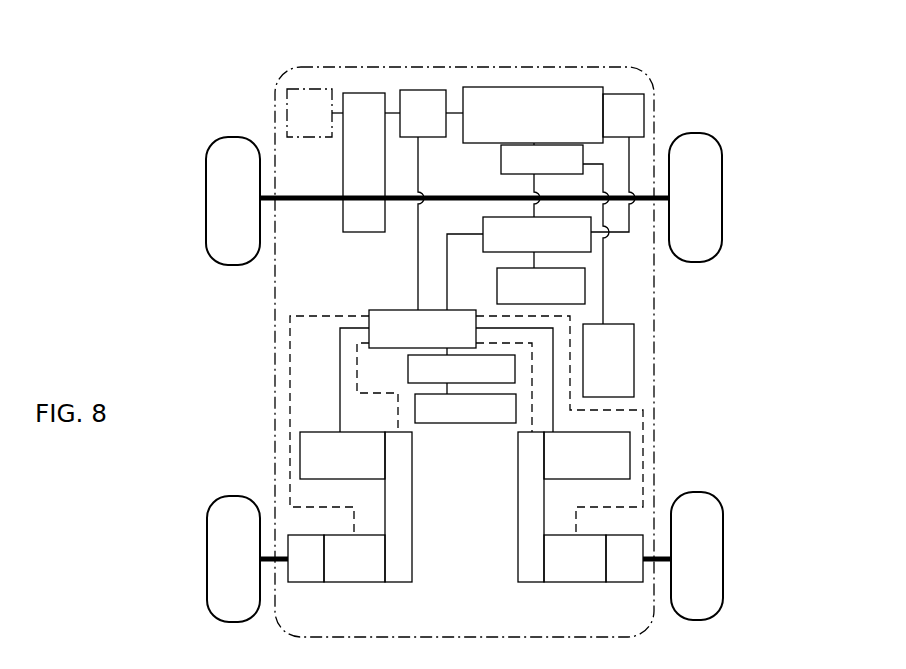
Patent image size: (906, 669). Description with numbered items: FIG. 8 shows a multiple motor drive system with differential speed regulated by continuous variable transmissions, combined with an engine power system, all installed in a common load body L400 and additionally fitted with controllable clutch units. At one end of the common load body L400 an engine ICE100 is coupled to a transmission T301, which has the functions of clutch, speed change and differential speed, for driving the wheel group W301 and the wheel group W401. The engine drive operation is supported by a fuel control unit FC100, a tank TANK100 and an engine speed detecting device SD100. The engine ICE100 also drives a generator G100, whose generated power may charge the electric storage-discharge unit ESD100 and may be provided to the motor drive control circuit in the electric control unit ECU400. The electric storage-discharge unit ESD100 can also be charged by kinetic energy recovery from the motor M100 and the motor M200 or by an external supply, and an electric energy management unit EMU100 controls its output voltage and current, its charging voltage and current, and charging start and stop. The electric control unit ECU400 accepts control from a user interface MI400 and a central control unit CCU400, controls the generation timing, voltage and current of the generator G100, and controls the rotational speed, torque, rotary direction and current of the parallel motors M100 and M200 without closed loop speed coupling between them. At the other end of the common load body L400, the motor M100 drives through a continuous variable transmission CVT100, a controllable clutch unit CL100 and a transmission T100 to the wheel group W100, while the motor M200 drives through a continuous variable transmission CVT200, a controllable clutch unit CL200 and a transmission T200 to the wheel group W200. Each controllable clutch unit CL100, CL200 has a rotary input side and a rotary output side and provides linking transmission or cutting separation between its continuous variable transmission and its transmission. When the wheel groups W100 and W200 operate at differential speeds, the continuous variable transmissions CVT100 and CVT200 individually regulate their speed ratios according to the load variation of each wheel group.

The generator G100 is at (305, 115).
The engine speed detecting device SD100 is at (618, 115).
The engine ICE100 is at (533, 115).
The fuel control unit FC100 is at (542, 159).
The central control unit CCU400 is at (537, 234).
The user interface MI400 is at (541, 286).
The transmission T301 is at (344, 233).
The electric control unit ECU400 is at (422, 329).
The tank TANK100 is at (617, 359).
The common load body L400 is at (274, 373).
The electric energy management unit EMU100 is at (461, 369).
The electric storage-discharge unit ESD100 is at (465, 408).
The motor M100 is at (342, 455).
The motor M200 is at (587, 455).
The continuous variable transmission CVT100 is at (440, 478).
The continuous variable transmission CVT200 is at (530, 535).
The transmission T100 is at (300, 577).
The transmission T200 is at (627, 570).
The controllable clutch unit CL100 is at (372, 568).
The controllable clutch unit CL200 is at (556, 572).
The wheel group W100 is at (205, 577).
The wheel group W200 is at (723, 573).
The wheel group W301 is at (204, 217).
The wheel group W401 is at (710, 214).